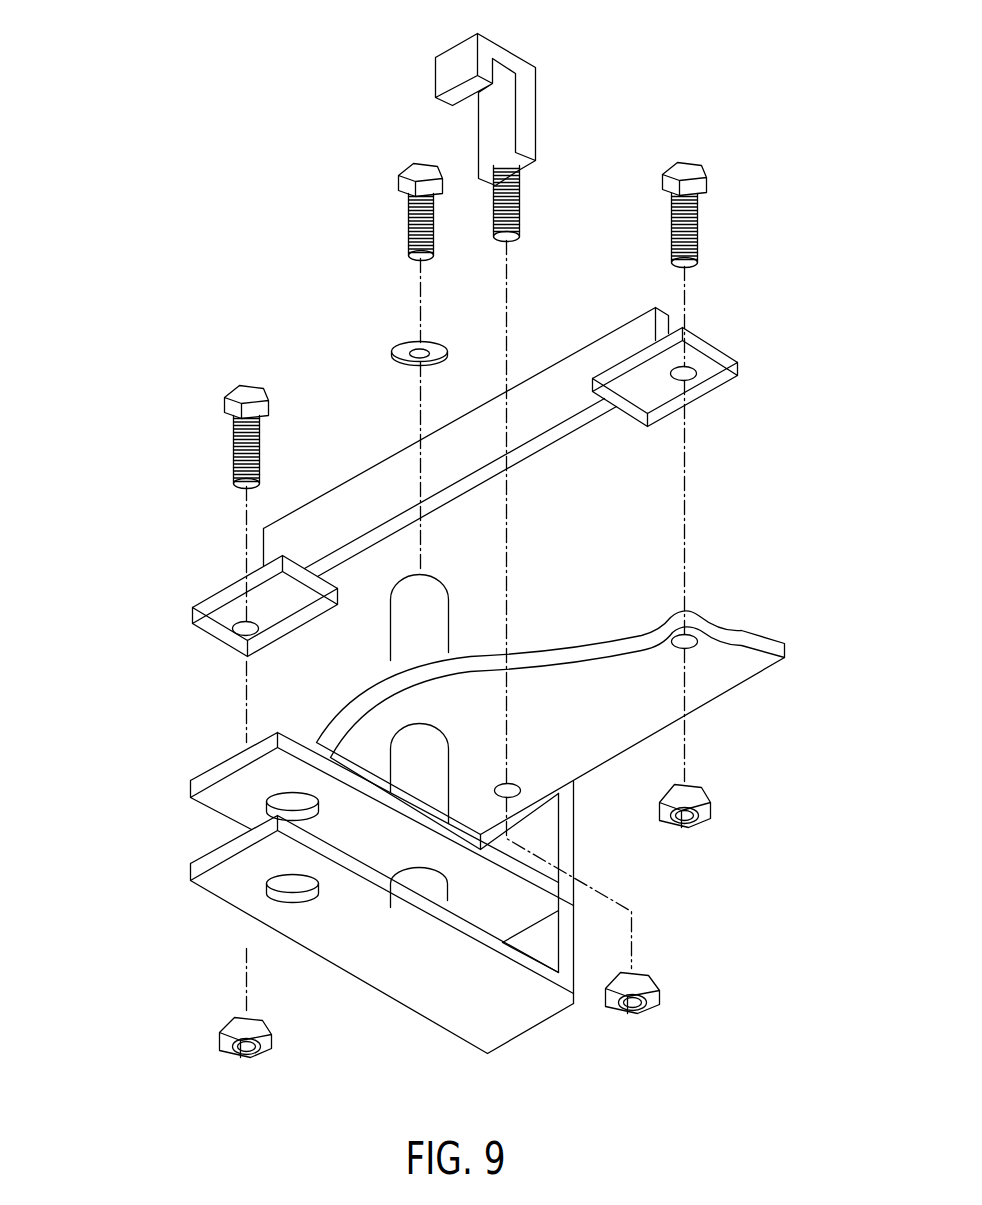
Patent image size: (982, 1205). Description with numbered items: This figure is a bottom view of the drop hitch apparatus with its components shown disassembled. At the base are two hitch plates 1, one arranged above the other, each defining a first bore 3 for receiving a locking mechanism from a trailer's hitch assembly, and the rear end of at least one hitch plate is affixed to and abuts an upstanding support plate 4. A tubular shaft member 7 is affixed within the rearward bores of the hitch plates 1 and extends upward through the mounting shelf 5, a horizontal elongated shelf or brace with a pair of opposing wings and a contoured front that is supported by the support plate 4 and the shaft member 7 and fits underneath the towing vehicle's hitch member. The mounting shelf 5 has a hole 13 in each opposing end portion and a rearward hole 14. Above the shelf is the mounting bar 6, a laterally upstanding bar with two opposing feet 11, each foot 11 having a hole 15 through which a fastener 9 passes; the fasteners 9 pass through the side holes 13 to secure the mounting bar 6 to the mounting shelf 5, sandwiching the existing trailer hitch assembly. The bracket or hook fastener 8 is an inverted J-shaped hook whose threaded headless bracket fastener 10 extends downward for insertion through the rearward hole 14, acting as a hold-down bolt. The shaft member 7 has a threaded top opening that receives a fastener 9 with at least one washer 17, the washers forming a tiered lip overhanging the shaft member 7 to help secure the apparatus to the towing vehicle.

The hitch plates 1 is at (426, 894).
The first bore 3 is at (264, 884).
The support plate 4 is at (576, 928).
The mounting shelf 5 is at (563, 699).
The mounting bar 6 is at (357, 473).
The shaft member 7 is at (395, 643).
The bracket or hook fastener 8 is at (535, 68).
The fastener 9 is at (407, 213).
The bracket fastener 10 is at (518, 213).
The feet 11 is at (727, 350).
The hole 13 is at (696, 635).
The rearward hole 14 is at (517, 777).
The hole 15 is at (690, 377).
The washer 17 is at (400, 342).